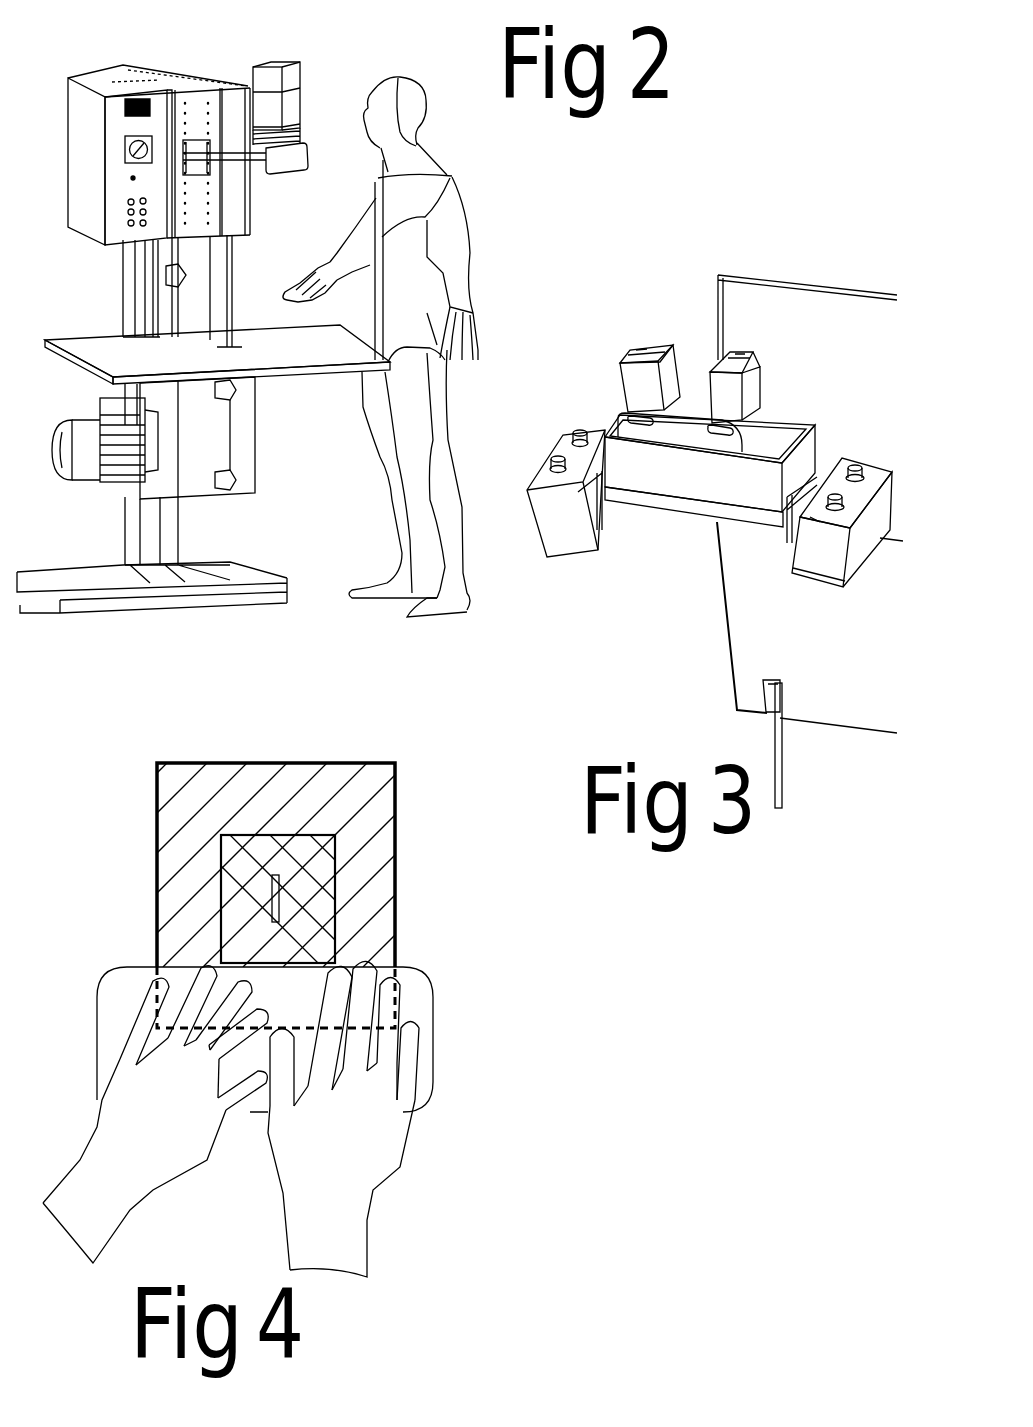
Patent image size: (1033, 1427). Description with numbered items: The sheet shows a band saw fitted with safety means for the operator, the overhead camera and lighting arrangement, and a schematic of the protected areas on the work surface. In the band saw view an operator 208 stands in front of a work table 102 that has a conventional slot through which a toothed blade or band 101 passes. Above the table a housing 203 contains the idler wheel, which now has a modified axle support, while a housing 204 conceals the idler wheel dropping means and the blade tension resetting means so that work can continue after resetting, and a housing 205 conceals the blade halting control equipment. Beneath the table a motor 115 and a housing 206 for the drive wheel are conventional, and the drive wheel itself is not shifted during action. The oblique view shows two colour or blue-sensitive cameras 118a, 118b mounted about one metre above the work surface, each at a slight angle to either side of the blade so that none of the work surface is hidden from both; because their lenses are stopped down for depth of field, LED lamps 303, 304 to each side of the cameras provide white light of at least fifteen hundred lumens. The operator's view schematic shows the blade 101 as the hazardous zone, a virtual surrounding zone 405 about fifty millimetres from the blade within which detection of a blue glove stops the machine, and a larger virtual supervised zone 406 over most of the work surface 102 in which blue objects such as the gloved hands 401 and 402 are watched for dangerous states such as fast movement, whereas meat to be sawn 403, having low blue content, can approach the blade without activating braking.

In FIG. 2, the toothed blade or band 101 is at (233, 293).
In FIG. 3, the toothed blade or band 101 is at (773, 770).
In FIG. 4, the toothed blade or band 101 is at (268, 878).
In FIG. 2, the work table 102 is at (105, 343).
In FIG. 2, the motor 115 is at (107, 480).
In FIG. 3, the camera 118a is at (628, 348).
In FIG. 3, the camera 118b is at (760, 392).
In FIG. 2, the idler wheel housing 203 is at (203, 63).
In FIG. 2, the housing 204 is at (128, 68).
In FIG. 2, the housing 205 is at (72, 152).
In FIG. 2, the housing for a drive wheel 206 is at (258, 423).
In FIG. 2, the operator 208 is at (450, 187).
In FIG. 3, the LED lamp 303 is at (533, 480).
In FIG. 3, the LED lamp 304 is at (863, 598).
In FIG. 4, the glove 401 is at (385, 1117).
In FIG. 4, the glove 402 is at (168, 1143).
In FIG. 4, the meat to be sawn 403 is at (422, 995).
In FIG. 4, the virtual surrounding zone 405 is at (335, 905).
In FIG. 4, the virtual supervised zone 406 is at (355, 758).